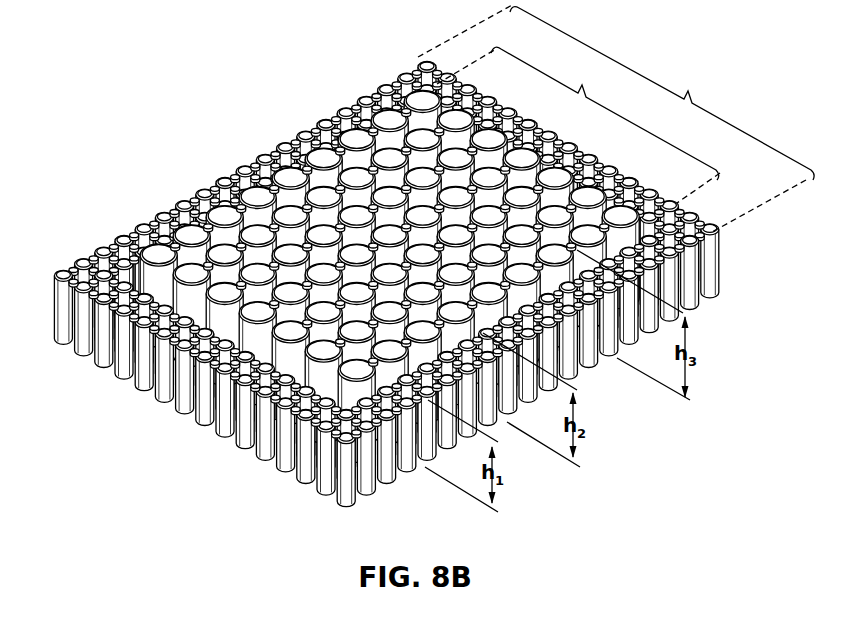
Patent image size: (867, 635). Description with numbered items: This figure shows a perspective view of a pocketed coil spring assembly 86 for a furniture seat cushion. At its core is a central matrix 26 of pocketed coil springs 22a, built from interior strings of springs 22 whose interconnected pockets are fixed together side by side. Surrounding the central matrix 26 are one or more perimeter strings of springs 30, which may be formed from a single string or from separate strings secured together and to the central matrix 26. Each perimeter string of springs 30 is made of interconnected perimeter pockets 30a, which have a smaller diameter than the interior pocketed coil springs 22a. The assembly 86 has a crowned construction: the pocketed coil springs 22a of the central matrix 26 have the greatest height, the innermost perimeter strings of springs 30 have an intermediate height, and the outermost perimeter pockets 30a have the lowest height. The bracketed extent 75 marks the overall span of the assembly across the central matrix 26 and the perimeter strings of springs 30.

The pocketed coil spring assembly 86 is at (291, 68).
The pocketed coil springs 22a is at (387, 157).
The interior strings of springs 22 is at (200, 295).
The perimeter strings of springs 30 is at (687, 218).
The perimeter pockets 30a is at (183, 215).
The central matrix 26 is at (578, 125).
The outer region 75 is at (616, 118).